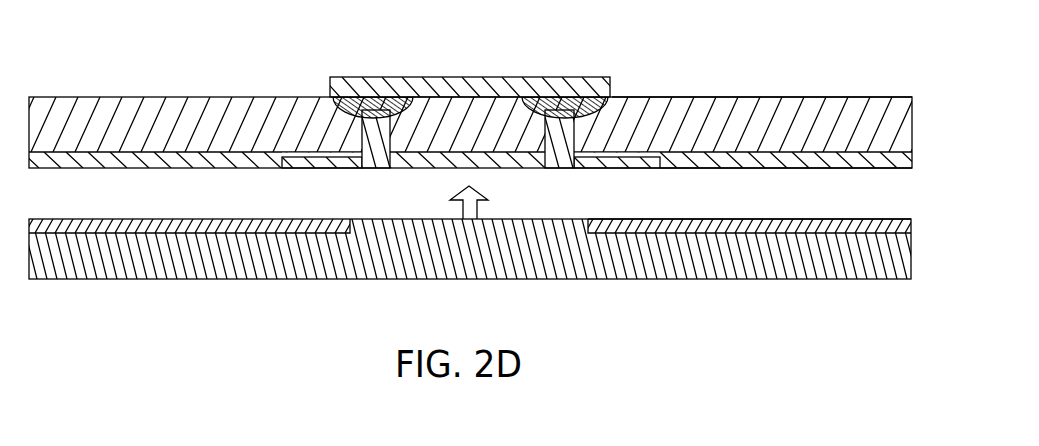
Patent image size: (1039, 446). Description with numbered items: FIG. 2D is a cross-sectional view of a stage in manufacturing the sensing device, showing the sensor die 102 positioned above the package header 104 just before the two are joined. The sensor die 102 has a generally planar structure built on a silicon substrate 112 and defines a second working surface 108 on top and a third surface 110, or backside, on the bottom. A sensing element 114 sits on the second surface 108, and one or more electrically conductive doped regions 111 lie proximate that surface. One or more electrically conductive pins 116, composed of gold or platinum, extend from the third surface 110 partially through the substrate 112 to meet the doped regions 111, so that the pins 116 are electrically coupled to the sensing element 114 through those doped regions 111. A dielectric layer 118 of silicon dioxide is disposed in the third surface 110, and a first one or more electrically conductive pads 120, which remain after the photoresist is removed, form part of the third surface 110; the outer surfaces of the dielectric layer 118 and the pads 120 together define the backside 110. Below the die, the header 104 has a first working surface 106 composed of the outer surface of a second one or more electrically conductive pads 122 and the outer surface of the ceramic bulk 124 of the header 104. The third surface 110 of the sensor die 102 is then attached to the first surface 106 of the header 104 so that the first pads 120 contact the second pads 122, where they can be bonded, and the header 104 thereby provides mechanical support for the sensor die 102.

The sensor die 102 is at (506, 119).
The package header 104 is at (506, 255).
The first working surface 106 is at (757, 211).
The second working surface 108 is at (648, 90).
The third surface 110 is at (719, 173).
The electrically conductive doped regions 111 is at (367, 102).
The substrate 112 is at (268, 112).
The sensing element 114 is at (466, 87).
The electrically conductive pins 116 is at (386, 114).
The dielectric layer 118 is at (171, 163).
The first electrically conductive pads 120 is at (312, 169).
The second electrically conductive pads 122 is at (184, 233).
The bulk 124 is at (655, 265).